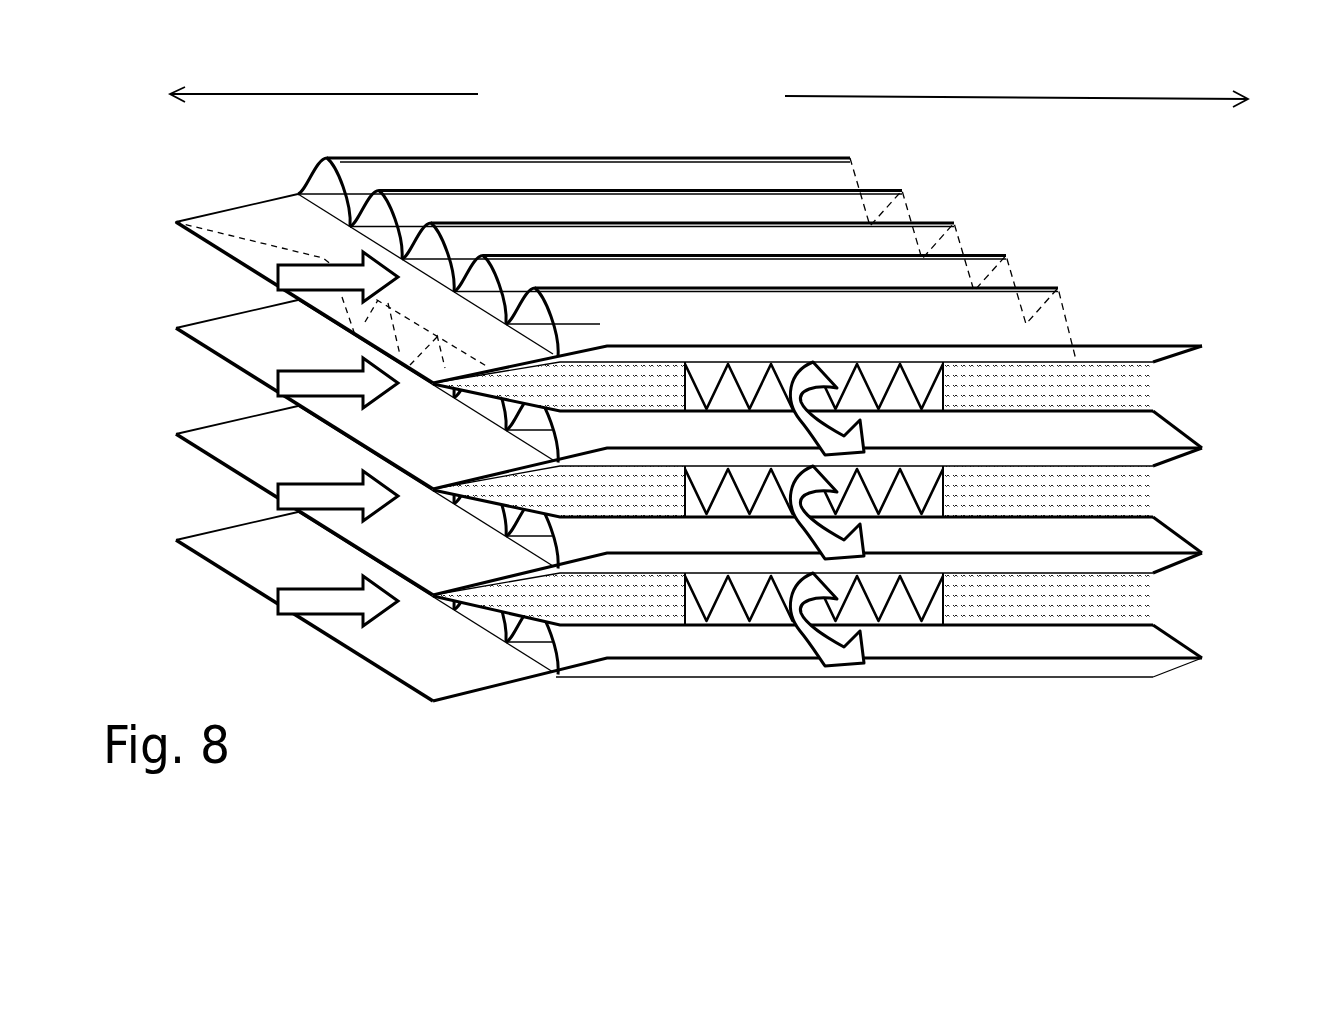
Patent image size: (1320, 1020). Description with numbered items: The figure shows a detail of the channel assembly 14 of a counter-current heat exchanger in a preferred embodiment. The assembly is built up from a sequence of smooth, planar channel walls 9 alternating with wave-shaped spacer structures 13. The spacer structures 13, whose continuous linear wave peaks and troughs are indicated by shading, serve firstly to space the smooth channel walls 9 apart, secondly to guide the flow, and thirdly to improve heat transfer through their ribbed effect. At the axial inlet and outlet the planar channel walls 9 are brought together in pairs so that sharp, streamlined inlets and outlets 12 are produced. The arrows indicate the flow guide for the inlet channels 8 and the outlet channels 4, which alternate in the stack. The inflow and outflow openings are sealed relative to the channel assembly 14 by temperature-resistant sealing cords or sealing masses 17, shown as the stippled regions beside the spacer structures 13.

The outlet channel 4 is at (814, 493).
The inlet channel 8 is at (338, 439).
The smooth channel wall 9 is at (304, 447).
The streamlined inlet/outlet 12 is at (434, 388).
The wave-shaped spacer structure 13 is at (817, 496).
The channel assembly 14 is at (709, 94).
The sealing cord or sealing mass 17 is at (793, 493).